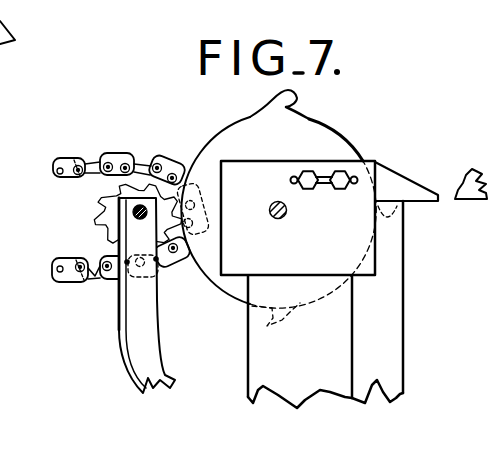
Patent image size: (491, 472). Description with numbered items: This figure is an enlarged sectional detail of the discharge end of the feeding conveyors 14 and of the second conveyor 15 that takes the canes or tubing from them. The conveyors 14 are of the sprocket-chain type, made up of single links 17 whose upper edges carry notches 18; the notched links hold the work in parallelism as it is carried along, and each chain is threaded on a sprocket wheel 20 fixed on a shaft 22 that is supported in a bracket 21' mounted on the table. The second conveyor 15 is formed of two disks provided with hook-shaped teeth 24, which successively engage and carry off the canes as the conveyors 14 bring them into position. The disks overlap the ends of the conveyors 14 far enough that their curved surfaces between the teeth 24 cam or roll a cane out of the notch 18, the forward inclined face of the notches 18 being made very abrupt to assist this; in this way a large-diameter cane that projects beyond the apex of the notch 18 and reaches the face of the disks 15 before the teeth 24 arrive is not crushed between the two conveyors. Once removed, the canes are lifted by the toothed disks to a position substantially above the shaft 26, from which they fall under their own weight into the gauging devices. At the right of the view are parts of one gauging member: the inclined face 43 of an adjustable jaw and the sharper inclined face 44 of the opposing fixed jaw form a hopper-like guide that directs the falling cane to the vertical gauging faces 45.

The conveyor 14 is at (97, 285).
The second conveyor 15 is at (335, 148).
The single link 17 is at (98, 158).
The notch 18 is at (95, 158).
The sprocket wheel 20 is at (108, 212).
The bracket 21' is at (166, 295).
The shaft 22 is at (133, 209).
The hook-shaped tooth 24 is at (297, 98).
The shaft 26 is at (287, 211).
The inclined face 43 is at (400, 177).
The sharper inclined face 44 is at (465, 174).
The vertical gauging face 45 is at (446, 204).